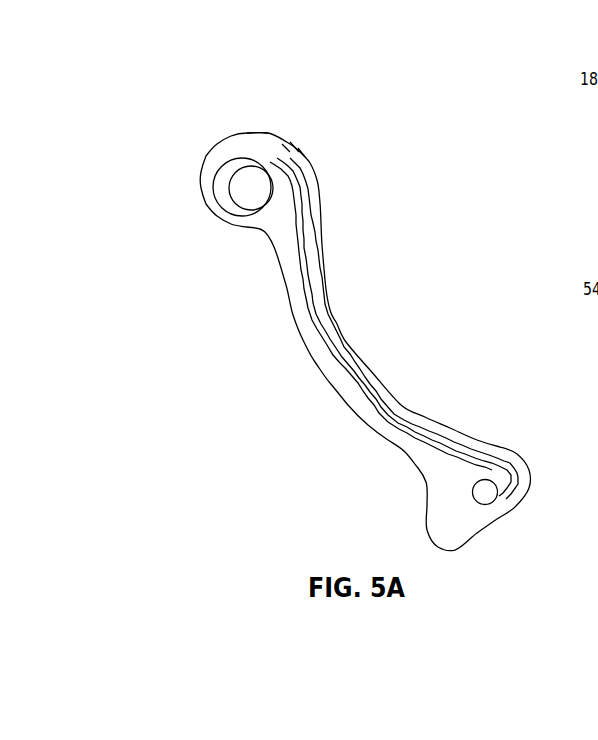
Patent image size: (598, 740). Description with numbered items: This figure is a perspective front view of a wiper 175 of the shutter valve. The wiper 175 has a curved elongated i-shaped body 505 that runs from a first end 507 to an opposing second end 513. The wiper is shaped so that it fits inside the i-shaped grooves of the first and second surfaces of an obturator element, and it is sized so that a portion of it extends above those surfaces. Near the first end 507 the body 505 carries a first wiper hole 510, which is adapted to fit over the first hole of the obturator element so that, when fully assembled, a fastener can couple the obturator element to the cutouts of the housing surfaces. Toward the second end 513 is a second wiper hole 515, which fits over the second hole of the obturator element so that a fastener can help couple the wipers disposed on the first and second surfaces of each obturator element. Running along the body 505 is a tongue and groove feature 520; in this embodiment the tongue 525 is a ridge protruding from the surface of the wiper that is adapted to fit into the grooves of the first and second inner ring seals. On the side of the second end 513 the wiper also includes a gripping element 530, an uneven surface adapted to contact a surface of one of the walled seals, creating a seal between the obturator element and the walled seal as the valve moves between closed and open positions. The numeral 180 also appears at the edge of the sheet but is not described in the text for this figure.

The wiper 175 is at (196, 116).
The curved elongated i-shaped body 505 is at (312, 333).
The first end 507 is at (198, 182).
The first wiper hole 510 is at (245, 177).
The second end 513 is at (528, 473).
The second wiper hole 515 is at (486, 489).
The tongue and groove feature 520 is at (308, 133).
The tongue 525 is at (380, 398).
The gripping element 530 is at (480, 533).
The pivot pin 180 is at (597, 175).